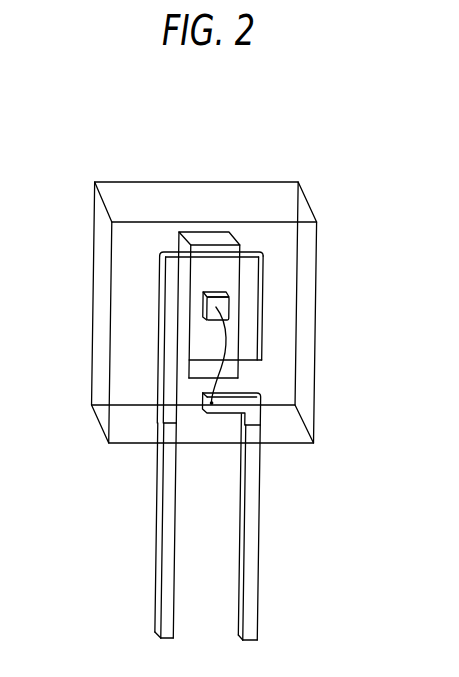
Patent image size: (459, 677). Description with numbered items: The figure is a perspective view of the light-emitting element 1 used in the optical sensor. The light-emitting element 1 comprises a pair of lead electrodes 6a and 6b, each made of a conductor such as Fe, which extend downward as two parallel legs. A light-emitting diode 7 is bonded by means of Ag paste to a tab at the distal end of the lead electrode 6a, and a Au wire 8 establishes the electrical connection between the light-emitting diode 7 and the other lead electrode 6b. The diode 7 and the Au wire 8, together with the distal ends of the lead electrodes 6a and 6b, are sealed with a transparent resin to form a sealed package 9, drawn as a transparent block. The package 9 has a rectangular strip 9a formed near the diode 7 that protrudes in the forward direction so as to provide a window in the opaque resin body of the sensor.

The light-emitting element 1 is at (342, 180).
The lead electrode 6a is at (160, 582).
The lead electrode 6b is at (255, 562).
The light-emitting diode 7 is at (228, 304).
The Au wire 8 is at (222, 346).
The sealed package 9 is at (131, 197).
The rectangular strip 9a is at (212, 238).